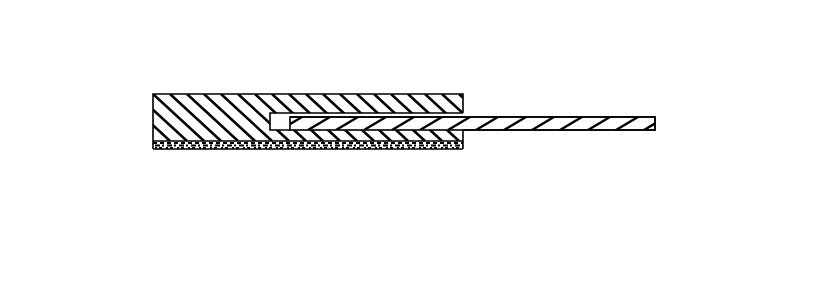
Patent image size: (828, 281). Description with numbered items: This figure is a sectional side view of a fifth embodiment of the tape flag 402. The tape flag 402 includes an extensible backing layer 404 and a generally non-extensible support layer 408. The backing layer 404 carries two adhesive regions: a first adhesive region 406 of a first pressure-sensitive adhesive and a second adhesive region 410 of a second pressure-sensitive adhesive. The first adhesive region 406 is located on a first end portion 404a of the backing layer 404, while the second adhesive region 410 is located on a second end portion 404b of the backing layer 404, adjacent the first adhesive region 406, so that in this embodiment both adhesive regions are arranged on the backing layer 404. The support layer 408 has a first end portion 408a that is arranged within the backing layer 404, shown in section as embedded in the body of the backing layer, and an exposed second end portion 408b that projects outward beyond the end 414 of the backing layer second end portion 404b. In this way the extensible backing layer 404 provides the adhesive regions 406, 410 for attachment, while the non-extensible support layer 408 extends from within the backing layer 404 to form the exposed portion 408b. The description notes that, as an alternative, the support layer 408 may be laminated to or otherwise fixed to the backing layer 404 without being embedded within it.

The tape flag 402 is at (250, 64).
The extensible backing layer 404 is at (153, 117).
The first end portion of the backing layer 404a is at (218, 146).
The second end portion of the backing layer 404b is at (463, 140).
The first adhesive region 406 is at (193, 149).
The support layer 408 is at (630, 130).
The first end portion of the support layer 408a is at (371, 113).
The second end portion of the support layer 408b is at (546, 119).
The second adhesive region 410 is at (408, 149).
The end of the backing layer second end portion 414 is at (466, 108).